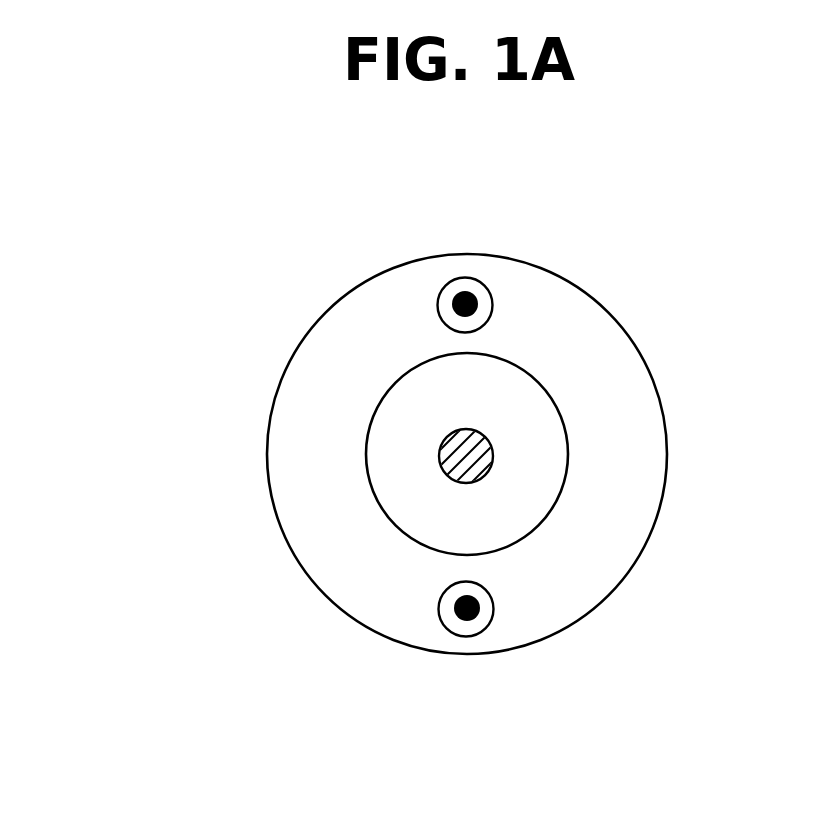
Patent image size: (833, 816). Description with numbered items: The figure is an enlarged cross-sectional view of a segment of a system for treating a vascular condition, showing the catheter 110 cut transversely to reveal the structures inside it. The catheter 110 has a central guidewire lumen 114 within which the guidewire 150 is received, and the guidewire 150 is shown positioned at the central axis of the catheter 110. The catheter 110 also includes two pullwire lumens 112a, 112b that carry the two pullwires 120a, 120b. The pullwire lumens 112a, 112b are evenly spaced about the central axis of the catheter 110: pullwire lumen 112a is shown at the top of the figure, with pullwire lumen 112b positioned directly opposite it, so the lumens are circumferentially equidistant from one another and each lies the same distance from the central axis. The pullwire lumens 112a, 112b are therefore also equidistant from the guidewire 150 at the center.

The catheter 110 is at (338, 298).
The central guidewire lumen 114 is at (515, 459).
The guidewire 150 is at (451, 460).
The pullwire lumen 112a is at (445, 303).
The pullwire 120a is at (478, 302).
The pullwire lumen 112b is at (452, 623).
The pullwire 120b is at (480, 612).